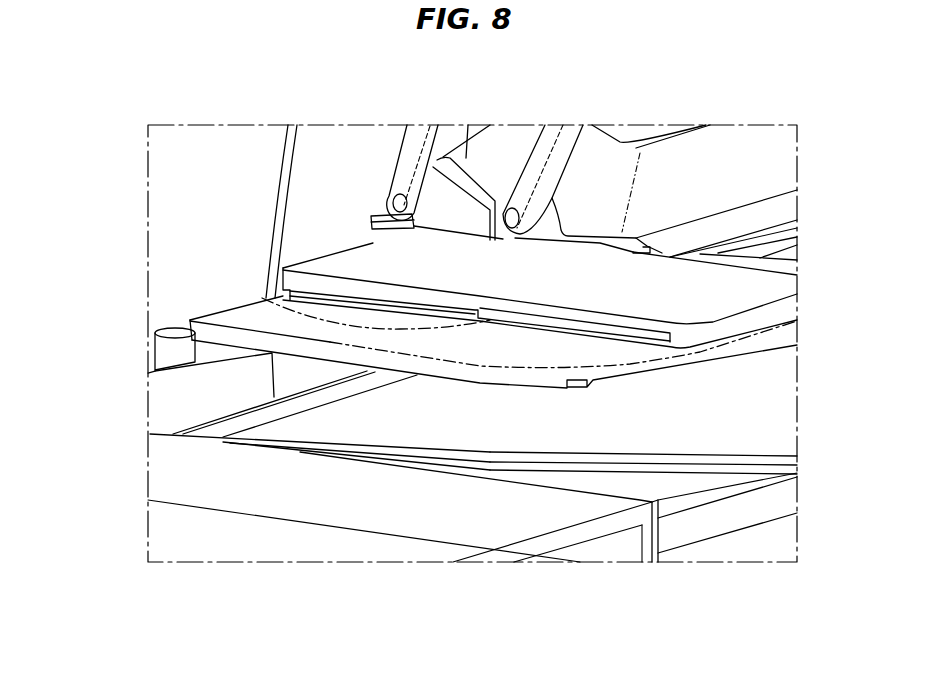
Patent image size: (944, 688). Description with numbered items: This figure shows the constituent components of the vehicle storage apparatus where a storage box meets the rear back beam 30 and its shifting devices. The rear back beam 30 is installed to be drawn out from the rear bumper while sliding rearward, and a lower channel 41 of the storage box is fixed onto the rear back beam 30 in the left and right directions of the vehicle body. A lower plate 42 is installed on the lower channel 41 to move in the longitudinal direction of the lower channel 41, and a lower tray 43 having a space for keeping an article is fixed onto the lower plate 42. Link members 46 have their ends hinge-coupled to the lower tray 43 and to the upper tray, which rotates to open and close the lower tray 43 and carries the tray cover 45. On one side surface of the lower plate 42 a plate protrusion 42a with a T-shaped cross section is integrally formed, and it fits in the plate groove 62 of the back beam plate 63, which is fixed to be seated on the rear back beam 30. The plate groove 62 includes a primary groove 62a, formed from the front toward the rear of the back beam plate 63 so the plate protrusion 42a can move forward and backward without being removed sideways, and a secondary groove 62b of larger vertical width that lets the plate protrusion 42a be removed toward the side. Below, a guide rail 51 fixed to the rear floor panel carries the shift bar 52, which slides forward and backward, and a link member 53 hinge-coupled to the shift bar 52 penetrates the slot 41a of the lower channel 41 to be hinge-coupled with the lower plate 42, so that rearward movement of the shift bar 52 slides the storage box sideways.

The rear back beam 30 is at (786, 404).
The lower channel 41 is at (163, 408).
The slot 41a is at (150, 372).
The lower plate 42 is at (783, 208).
The plate protrusion 42a is at (368, 222).
The lower tray 43 is at (740, 140).
The tray cover 45 is at (290, 187).
The link member 46 is at (418, 144).
The guide rail 51 is at (308, 548).
The shift bar 52 is at (758, 552).
The link member 53 is at (172, 356).
The plate groove 62 is at (419, 289).
The primary groove 62a is at (360, 290).
The secondary groove 62b is at (283, 277).
The back beam plate 63 is at (763, 283).